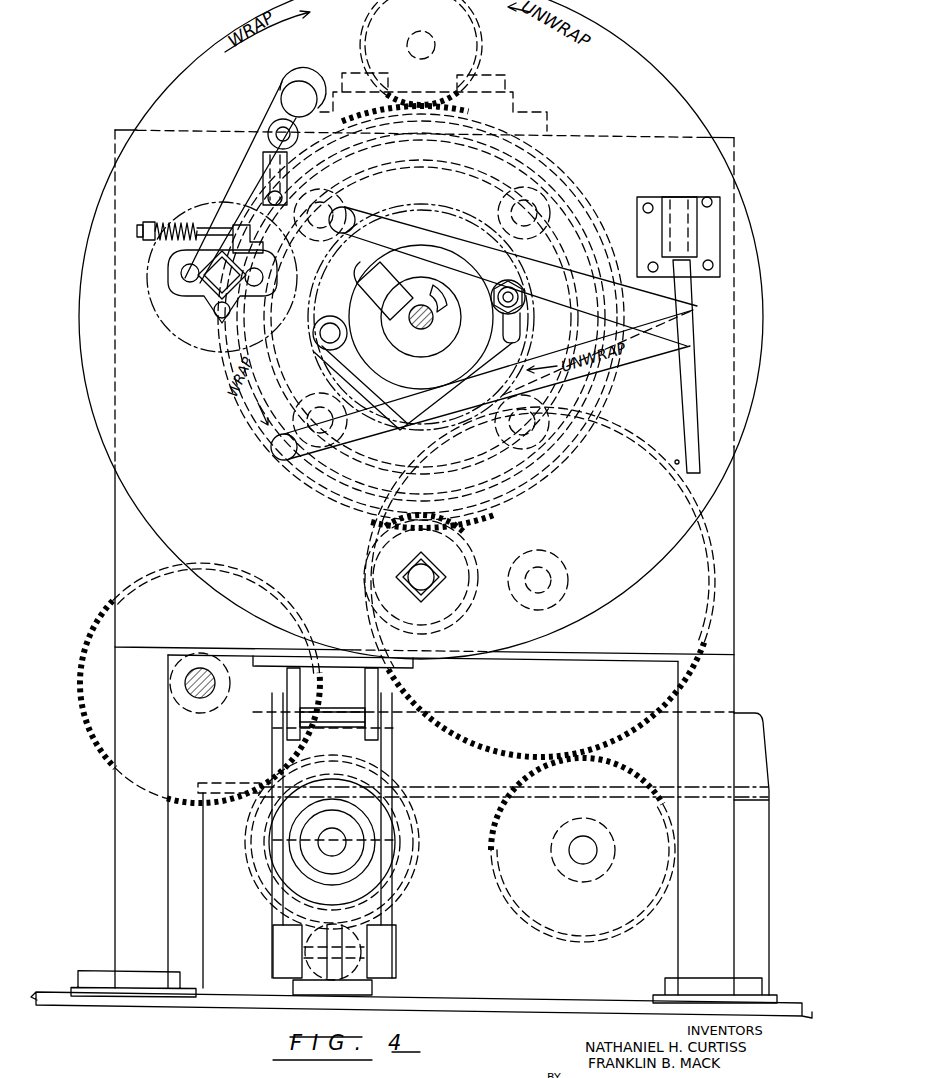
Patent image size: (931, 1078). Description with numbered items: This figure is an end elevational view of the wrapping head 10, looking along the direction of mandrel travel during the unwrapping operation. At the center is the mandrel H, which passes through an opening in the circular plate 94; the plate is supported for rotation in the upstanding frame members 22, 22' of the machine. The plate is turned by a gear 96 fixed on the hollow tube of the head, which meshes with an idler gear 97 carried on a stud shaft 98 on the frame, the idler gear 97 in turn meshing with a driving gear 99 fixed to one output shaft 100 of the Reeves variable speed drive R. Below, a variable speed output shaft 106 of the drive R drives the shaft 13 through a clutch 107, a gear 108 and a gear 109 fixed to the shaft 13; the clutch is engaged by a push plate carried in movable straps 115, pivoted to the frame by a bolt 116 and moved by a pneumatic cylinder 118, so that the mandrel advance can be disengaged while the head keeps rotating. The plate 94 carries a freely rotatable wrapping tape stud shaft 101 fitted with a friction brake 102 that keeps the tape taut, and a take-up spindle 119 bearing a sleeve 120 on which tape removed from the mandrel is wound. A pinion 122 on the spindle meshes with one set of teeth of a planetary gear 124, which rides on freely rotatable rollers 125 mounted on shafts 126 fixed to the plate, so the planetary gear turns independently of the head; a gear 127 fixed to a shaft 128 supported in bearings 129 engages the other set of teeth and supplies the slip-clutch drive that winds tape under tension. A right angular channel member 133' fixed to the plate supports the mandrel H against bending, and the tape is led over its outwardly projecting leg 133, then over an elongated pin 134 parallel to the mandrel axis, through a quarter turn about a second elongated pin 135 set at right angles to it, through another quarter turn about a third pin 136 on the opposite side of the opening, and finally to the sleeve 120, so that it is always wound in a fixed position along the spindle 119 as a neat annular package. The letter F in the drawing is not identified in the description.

The wrapping head 10 is at (103, 172).
The shaft 13 is at (200, 700).
The upstanding frame member 22 is at (132, 822).
The upstanding frame member 22' is at (718, 829).
The circular plate 94 is at (640, 60).
The gear 96 is at (432, 206).
The idler gear 97 is at (712, 582).
The stud shaft 98 is at (552, 578).
The driving gear 99 is at (505, 912).
The output shaft 100 is at (585, 860).
The wrapping tape stud shaft 101 is at (207, 325).
The friction brake 102 is at (217, 227).
The variable speed output shaft 106 is at (345, 855).
The clutch 107 is at (409, 839).
The gear 108 is at (256, 915).
The gear 109 is at (92, 740).
The movable straps 115 is at (388, 765).
The bolt 116 is at (382, 738).
The pneumatic cylinder 118 is at (368, 953).
The take-up stud shaft or spindle 119 is at (445, 592).
The sleeve 120 is at (398, 578).
The pinion 122 is at (462, 538).
The planetary gear 124 is at (577, 170).
The rollers 125 is at (580, 197).
The shafts 126 is at (515, 213).
The gear 127 is at (360, 46).
The shaft 128 is at (435, 45).
The bearings 129 is at (500, 75).
The outwardly projecting leg 133 is at (385, 319).
The right angular channel member 133' is at (419, 280).
The elongated pin 134 is at (345, 210).
The second elongated pin 135 is at (682, 397).
The third pin 136 is at (277, 457).
The mandrel H is at (419, 337).
The Reeves variable speed drive R is at (768, 922).
The base F is at (522, 981).